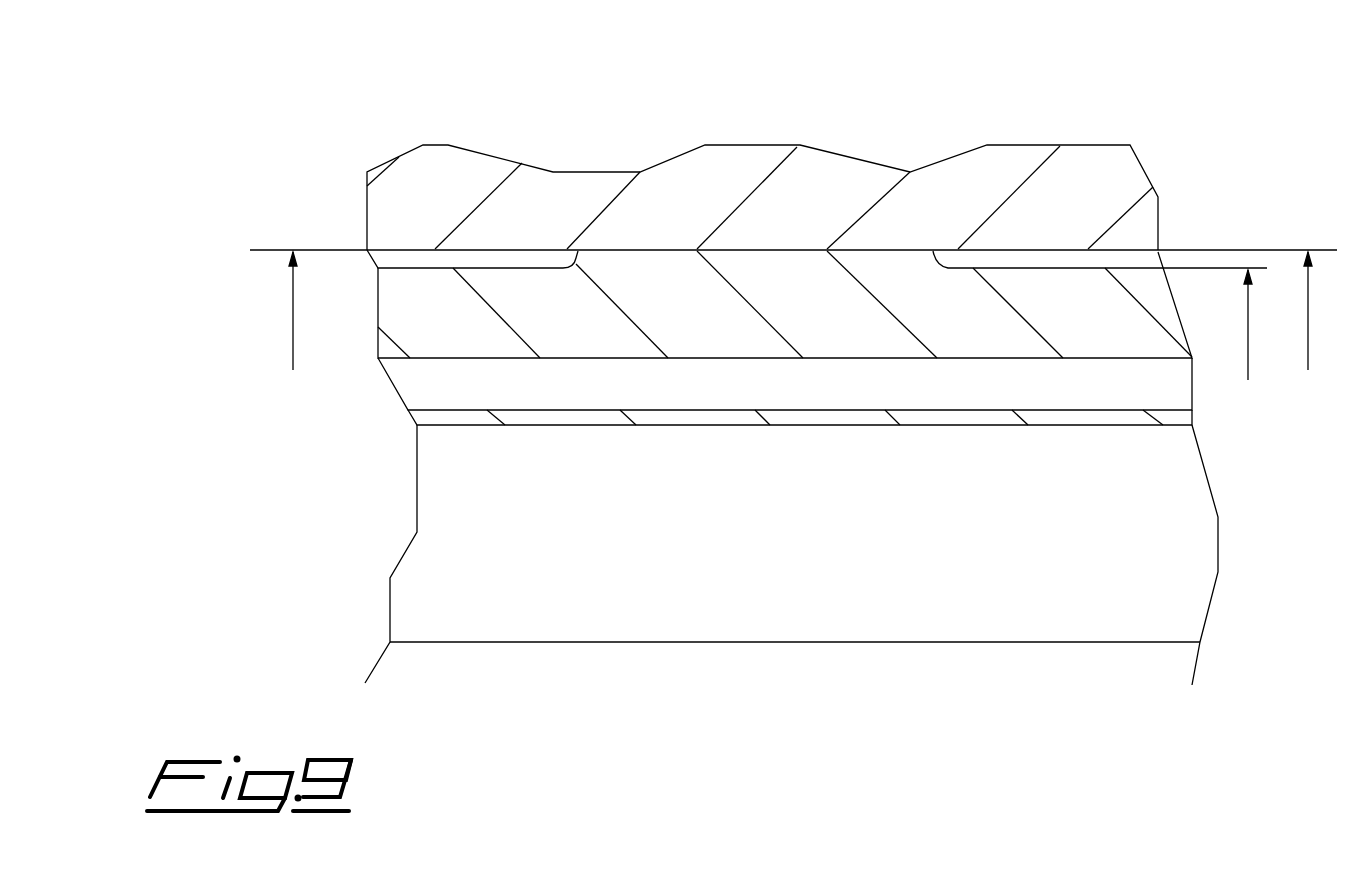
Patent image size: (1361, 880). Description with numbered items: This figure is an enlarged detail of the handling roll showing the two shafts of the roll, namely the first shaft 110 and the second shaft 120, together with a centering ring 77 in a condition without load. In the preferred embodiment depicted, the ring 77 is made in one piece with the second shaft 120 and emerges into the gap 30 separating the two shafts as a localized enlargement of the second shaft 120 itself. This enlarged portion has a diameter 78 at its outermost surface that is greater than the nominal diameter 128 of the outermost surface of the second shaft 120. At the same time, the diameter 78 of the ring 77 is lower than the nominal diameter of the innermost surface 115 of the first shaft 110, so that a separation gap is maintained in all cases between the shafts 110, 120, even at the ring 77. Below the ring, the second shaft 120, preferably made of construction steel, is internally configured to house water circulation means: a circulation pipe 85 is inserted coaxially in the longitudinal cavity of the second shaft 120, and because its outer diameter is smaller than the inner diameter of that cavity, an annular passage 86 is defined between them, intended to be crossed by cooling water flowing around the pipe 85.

The gap 30 is at (1057, 258).
The centering ring 77 is at (748, 267).
The diameter of the outermost surface of the ring 78 is at (1308, 326).
The circulation pipe 85 is at (695, 417).
The annular passage 86 is at (963, 387).
The first shaft 110 is at (983, 190).
The innermost surface of the first shaft 115 is at (297, 324).
The second shaft 120 is at (533, 310).
The nominal diameter of the outermost surface of the second shaft 128 is at (1248, 343).